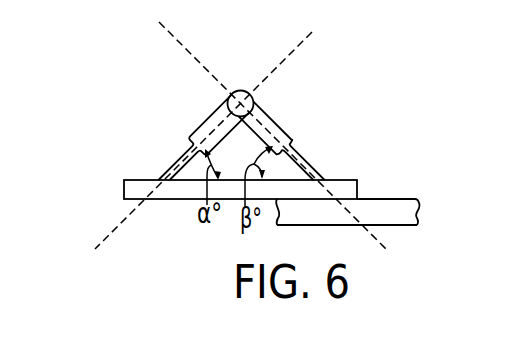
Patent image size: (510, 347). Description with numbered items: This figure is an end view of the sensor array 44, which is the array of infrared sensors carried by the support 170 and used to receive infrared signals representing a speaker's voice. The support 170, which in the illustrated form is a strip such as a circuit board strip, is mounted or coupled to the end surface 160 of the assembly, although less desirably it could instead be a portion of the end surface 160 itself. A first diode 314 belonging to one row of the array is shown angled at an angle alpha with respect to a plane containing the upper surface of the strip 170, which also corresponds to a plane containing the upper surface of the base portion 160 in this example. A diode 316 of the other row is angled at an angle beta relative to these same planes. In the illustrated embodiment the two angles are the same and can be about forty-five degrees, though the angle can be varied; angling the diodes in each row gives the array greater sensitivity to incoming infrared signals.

The array 44 is at (124, 94).
The first diode 314 is at (193, 134).
The diode 316 is at (270, 114).
The end surface 160 is at (385, 198).
The support 170 is at (162, 200).